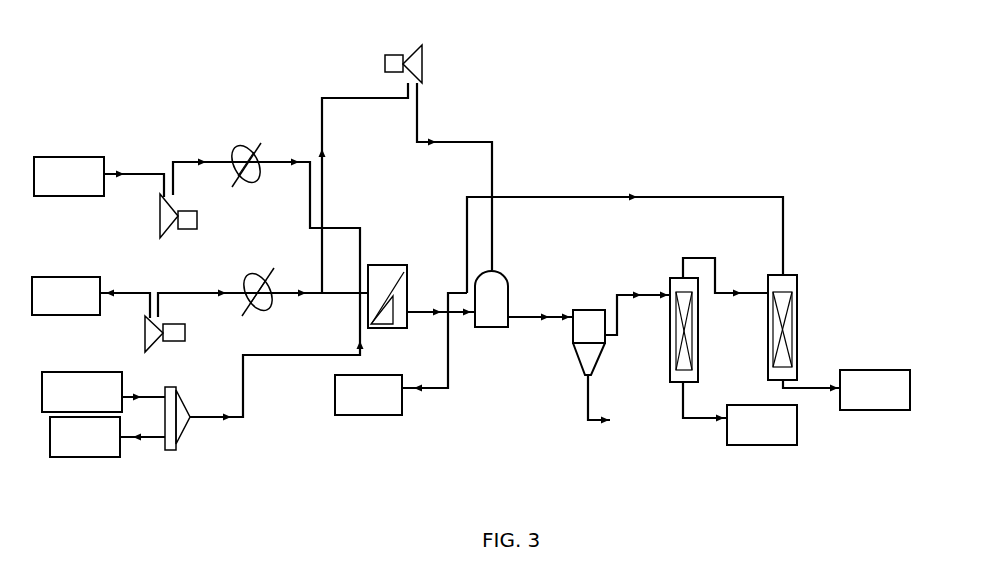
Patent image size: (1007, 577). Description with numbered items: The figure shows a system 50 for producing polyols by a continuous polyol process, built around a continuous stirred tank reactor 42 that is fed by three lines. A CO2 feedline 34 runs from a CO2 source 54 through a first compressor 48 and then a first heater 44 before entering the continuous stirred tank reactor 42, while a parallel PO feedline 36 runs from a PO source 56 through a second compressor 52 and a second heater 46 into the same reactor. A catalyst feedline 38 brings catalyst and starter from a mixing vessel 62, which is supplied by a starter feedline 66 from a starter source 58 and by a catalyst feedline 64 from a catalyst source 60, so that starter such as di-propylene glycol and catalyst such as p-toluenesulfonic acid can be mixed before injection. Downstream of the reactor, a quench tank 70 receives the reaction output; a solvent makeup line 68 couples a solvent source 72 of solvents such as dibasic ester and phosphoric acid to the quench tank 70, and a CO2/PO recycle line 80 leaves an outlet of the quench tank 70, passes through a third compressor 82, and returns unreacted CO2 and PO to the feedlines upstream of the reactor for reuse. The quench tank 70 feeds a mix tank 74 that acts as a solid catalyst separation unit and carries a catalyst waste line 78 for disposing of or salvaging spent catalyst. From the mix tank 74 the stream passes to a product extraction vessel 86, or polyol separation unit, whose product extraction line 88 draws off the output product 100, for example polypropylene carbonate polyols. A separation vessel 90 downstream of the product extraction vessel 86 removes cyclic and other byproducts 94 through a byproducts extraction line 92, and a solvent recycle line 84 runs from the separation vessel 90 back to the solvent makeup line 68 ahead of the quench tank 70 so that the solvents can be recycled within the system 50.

The CO2 feedline 34 is at (178, 160).
The PO feedline 36 is at (183, 292).
The catalyst feedline 38 is at (313, 358).
The continuous stirred tank reactor 42 is at (387, 270).
The first heater 44 is at (238, 147).
The second heater 46 is at (252, 275).
The first compressor 48 is at (162, 220).
The system 50 is at (108, 94).
The second compressor 52 is at (143, 328).
The CO2 source 54 is at (99, 177).
The PO source 56 is at (91, 297).
The starter source 58 is at (82, 392).
The catalyst source 60 is at (85, 437).
The mixing vessel 62 is at (176, 440).
The catalyst feedline 64 is at (140, 442).
The starter feedline 66 is at (142, 395).
The solvent makeup line 68 is at (448, 378).
The quench tank 70 is at (503, 290).
The solvent source 72 is at (368, 395).
The mix tank 74 is at (575, 363).
The catalyst waste line 78 is at (587, 418).
The CO2/PO recycle line 80 is at (383, 98).
The third compressor 82 is at (423, 70).
The solvent recycle line 84 is at (672, 197).
The product extraction vessel 86 is at (698, 360).
The product extraction line 88 is at (685, 418).
The separation vessel 90 is at (798, 335).
The byproducts extraction line 92 is at (813, 383).
The byproducts 94 is at (875, 390).
The output product 100 is at (762, 425).